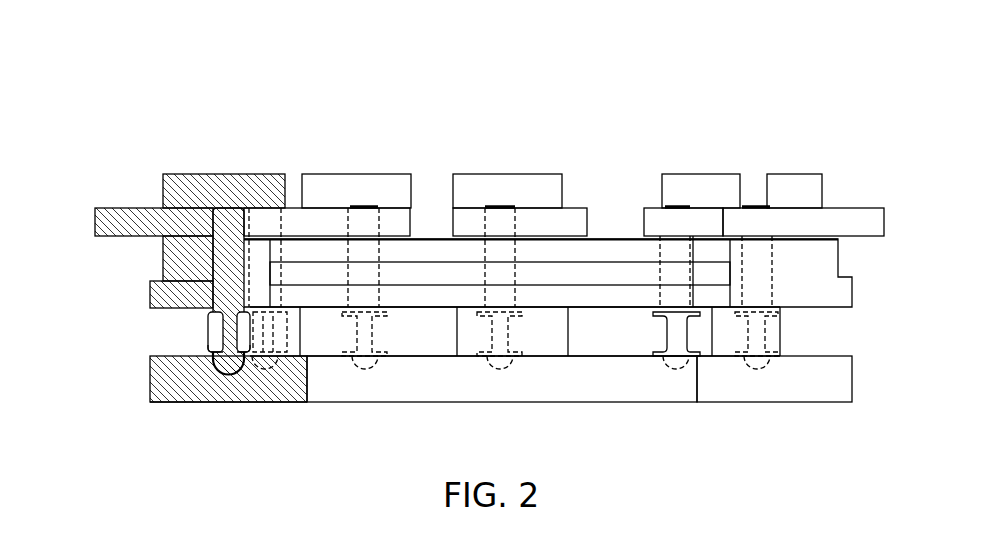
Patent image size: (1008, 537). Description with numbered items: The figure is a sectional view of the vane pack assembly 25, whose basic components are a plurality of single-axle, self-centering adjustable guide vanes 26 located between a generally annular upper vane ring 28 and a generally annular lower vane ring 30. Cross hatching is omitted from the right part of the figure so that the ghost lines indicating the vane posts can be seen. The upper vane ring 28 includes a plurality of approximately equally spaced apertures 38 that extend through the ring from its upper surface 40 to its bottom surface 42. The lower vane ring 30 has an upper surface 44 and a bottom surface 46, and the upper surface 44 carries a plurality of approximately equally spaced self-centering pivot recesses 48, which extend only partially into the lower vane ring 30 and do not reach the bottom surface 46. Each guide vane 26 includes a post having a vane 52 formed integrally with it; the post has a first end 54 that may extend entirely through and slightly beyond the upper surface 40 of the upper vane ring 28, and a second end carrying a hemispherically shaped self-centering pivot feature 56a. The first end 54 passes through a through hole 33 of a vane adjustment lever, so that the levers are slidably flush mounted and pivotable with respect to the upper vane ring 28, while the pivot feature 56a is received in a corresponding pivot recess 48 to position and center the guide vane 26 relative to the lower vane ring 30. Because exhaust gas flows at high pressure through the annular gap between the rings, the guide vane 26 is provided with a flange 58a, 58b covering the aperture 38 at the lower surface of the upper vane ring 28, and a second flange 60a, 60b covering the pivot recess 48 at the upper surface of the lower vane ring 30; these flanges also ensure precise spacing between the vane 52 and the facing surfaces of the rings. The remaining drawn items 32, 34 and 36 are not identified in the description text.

The vane pack assembly 25 is at (468, 284).
The guide vane 26 is at (196, 292).
The upper vane ring 28 is at (173, 255).
The lower vane ring 30 is at (165, 380).
The chip 32 is at (413, 182).
The through hole 33 is at (518, 225).
The interposer layer 34 is at (310, 276).
The lower housing block 36 is at (148, 295).
The aperture 38 is at (348, 274).
The upper surface 40 is at (430, 237).
The bottom surface 42 is at (167, 308).
The upper surface 44 is at (817, 355).
The bottom surface 46 is at (180, 403).
The self-centering pivot recess 48 is at (765, 372).
The vane 52 is at (547, 342).
The first end 54 is at (508, 207).
The self-centering pivot feature 56a is at (235, 374).
The flange 58a is at (215, 310).
The flange 58b is at (247, 310).
The second flange 60a is at (212, 354).
The second flange 60b is at (248, 354).